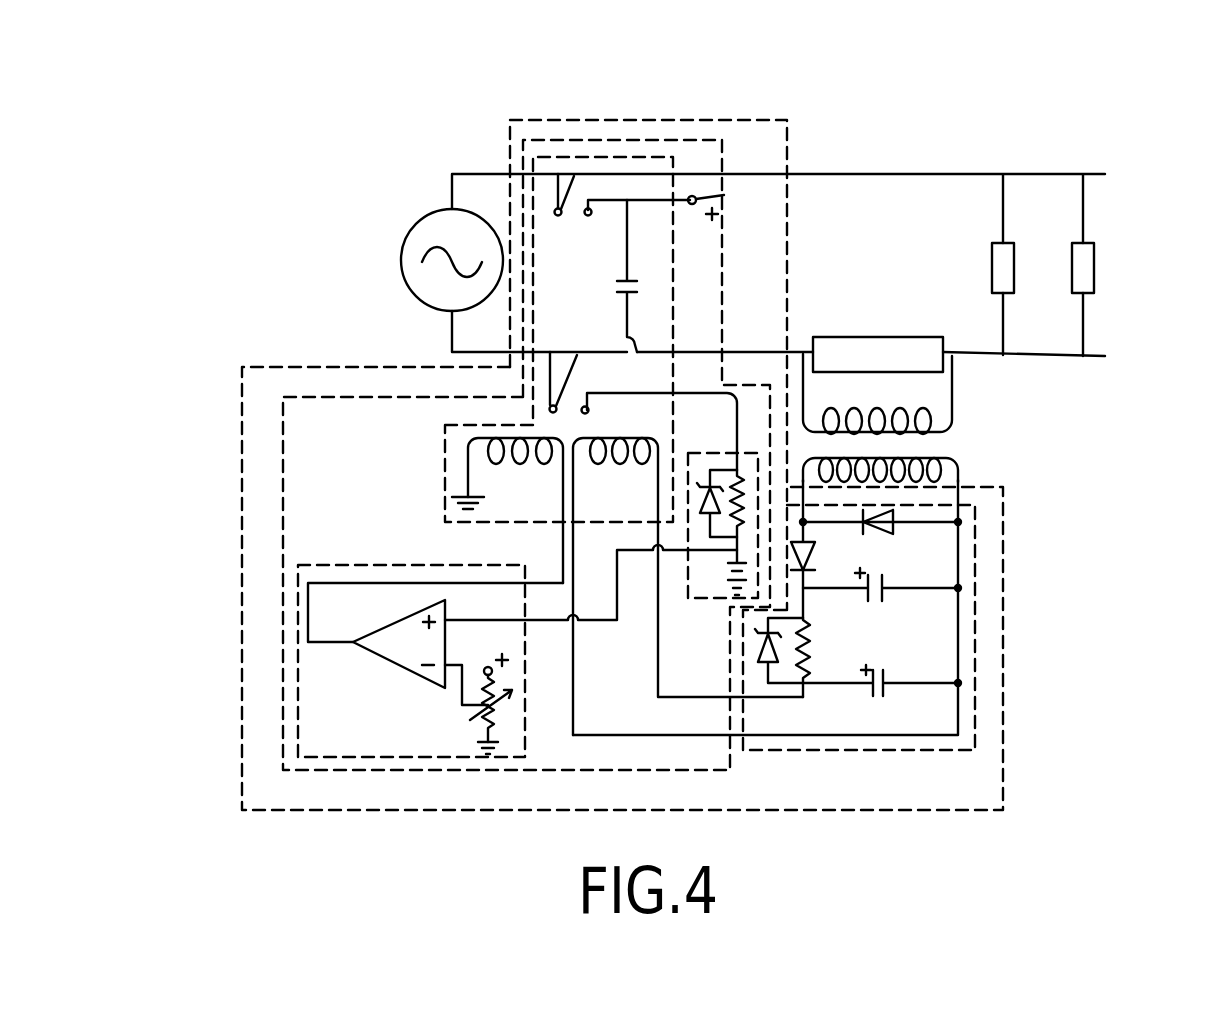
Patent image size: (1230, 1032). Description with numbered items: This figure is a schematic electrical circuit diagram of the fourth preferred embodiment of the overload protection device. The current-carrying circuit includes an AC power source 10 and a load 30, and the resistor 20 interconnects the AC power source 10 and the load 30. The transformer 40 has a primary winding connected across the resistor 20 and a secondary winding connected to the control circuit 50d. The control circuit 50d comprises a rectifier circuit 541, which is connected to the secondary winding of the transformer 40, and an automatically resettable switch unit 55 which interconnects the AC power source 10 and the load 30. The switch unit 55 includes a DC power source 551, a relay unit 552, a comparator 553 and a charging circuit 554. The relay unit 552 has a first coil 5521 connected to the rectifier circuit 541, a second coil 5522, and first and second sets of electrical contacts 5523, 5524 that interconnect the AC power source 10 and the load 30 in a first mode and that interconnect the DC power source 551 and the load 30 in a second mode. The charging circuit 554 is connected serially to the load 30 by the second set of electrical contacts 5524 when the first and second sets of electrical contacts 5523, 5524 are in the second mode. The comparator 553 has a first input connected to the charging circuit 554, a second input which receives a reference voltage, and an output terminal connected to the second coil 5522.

The AC power source 10 is at (402, 266).
The resistor 20 is at (897, 337).
The load 30 is at (991, 268).
The transformer 40 is at (953, 462).
The control circuit 50d is at (1003, 606).
The switch unit 55 is at (723, 220).
The DC power source 551 is at (724, 195).
The relay unit 552 is at (675, 289).
The comparator 553 is at (298, 725).
The charging circuit 554 is at (716, 578).
The rectifier circuit 541 is at (1003, 717).
The first coil 5521 is at (619, 464).
The second coil 5522 is at (493, 453).
The first set of electrical contacts 5523 is at (578, 208).
The second set of electrical contacts 5524 is at (572, 405).